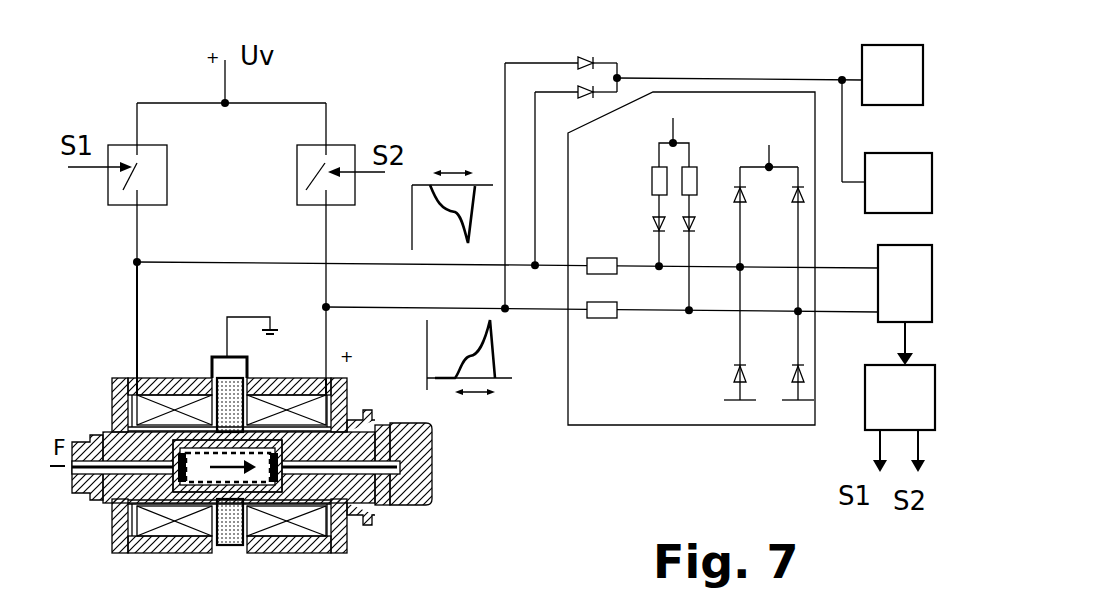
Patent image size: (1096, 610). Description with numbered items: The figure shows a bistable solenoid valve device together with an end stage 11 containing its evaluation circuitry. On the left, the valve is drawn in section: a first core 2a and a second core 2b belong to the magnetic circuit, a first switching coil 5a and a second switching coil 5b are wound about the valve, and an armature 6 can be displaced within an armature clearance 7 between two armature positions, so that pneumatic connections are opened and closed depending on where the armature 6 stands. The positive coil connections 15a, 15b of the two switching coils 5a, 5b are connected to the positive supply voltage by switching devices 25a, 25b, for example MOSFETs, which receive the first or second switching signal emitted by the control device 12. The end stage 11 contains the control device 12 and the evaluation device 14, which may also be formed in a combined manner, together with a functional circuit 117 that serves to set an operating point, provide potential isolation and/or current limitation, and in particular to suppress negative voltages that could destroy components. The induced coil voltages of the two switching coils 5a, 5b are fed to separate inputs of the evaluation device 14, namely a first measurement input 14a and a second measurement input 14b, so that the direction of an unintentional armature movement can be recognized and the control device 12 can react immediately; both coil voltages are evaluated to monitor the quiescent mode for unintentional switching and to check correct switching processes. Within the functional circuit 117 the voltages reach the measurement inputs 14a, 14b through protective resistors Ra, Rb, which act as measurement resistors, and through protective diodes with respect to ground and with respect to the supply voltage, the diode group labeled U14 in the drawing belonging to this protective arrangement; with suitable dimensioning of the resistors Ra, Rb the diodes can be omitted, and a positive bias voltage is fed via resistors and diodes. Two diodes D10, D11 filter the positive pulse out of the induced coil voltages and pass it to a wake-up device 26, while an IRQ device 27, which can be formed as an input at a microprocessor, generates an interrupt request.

The switching device 25a is at (133, 146).
The switching device 25b is at (330, 150).
The positive coil connection 15a is at (136, 380).
The positive coil connection 15b is at (325, 375).
The first core 2a is at (72, 492).
The second core 2b is at (430, 498).
The first switching coil 5a is at (173, 533).
The second switching coil 5b is at (278, 532).
The armature 6 is at (212, 487).
The armature clearance 7 is at (432, 452).
The end stage 11 is at (691, 321).
The functional circuit 117 is at (691, 309).
The evaluation device 14 is at (905, 283).
The first measurement input 14a is at (846, 253).
The second measurement input 14b is at (847, 336).
The control device 12 is at (900, 397).
The wake-up device 26 is at (892, 75).
The IRQ device 27 is at (898, 183).
The diode D10 is at (582, 58).
The diode D11 is at (577, 88).
The protective resistor Ra is at (600, 257).
The protective resistor Rb is at (597, 320).
The reference voltage node U14 is at (769, 259).